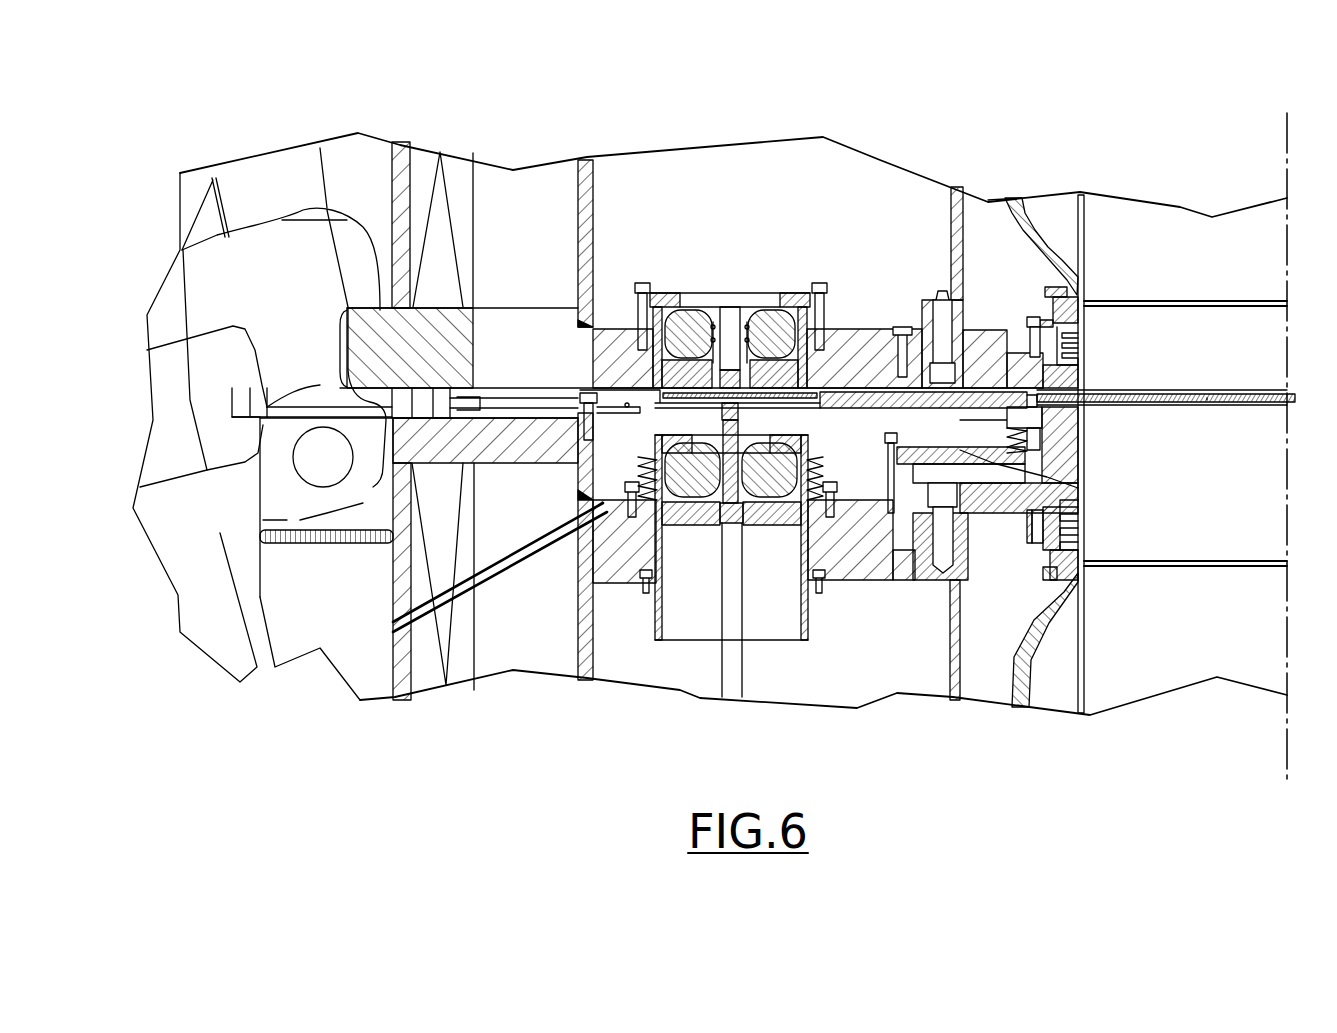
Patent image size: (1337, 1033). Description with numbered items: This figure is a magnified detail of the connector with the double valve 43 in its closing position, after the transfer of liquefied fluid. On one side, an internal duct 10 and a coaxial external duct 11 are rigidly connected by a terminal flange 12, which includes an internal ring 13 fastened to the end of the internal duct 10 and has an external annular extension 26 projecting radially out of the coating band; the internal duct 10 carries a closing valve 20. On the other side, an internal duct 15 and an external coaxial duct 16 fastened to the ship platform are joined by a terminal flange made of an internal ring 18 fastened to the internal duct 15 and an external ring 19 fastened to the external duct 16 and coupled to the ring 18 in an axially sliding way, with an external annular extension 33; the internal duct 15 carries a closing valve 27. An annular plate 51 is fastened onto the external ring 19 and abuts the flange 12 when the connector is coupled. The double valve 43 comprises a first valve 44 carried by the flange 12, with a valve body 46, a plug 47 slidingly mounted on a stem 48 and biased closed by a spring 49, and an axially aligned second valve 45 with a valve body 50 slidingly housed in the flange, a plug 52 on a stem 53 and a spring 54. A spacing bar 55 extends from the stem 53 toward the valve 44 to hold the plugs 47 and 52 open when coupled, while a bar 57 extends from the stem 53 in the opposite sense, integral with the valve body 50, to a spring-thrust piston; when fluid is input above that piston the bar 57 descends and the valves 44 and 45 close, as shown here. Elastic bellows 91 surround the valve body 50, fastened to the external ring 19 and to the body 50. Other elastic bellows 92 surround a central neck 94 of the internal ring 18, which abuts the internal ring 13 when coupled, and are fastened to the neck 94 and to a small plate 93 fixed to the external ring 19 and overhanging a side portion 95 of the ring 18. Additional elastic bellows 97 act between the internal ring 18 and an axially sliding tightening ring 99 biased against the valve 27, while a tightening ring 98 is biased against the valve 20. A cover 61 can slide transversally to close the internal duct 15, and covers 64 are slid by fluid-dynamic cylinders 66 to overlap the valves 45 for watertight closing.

The internal duct 10 is at (955, 210).
The external duct 11 is at (580, 203).
The terminal flange 12 is at (838, 326).
The internal ring 13 is at (1080, 380).
The internal duct 15 is at (957, 653).
The external coaxial duct 16 is at (577, 643).
The internal ring 18 is at (1088, 459).
The external ring 19 is at (877, 550).
The closing valve 20 is at (1080, 237).
The external annular extension 26 is at (455, 332).
The closing valve 27 is at (1160, 667).
The external annular extension 33 is at (455, 441).
The double valve 43 is at (774, 183).
The first valve 44 is at (800, 284).
The second valve 45 is at (678, 641).
The valve body 46 is at (662, 290).
The plug 47 is at (758, 360).
The stem 48 is at (718, 307).
The spring 49 is at (678, 320).
The valve body 50 is at (650, 602).
The annular plate 51 is at (860, 400).
The plug 52 is at (703, 448).
The stem 53 is at (717, 510).
The spring 54 is at (748, 487).
The spacing bar 55 is at (738, 413).
The bar 57 is at (743, 675).
The cover 61 is at (1207, 400).
The covers 64 is at (667, 397).
The fluid-dynamic cylinders 66 is at (323, 403).
The elastic bellows 91 is at (822, 470).
The elastic bellows 92 is at (1027, 437).
The small plate 93 is at (1078, 488).
The central neck 94 is at (1080, 422).
The side portion 95 is at (1003, 500).
The elastic bellows 97 is at (1080, 520).
The tightening ring 98 is at (1080, 320).
The tightening ring 99 is at (1083, 543).